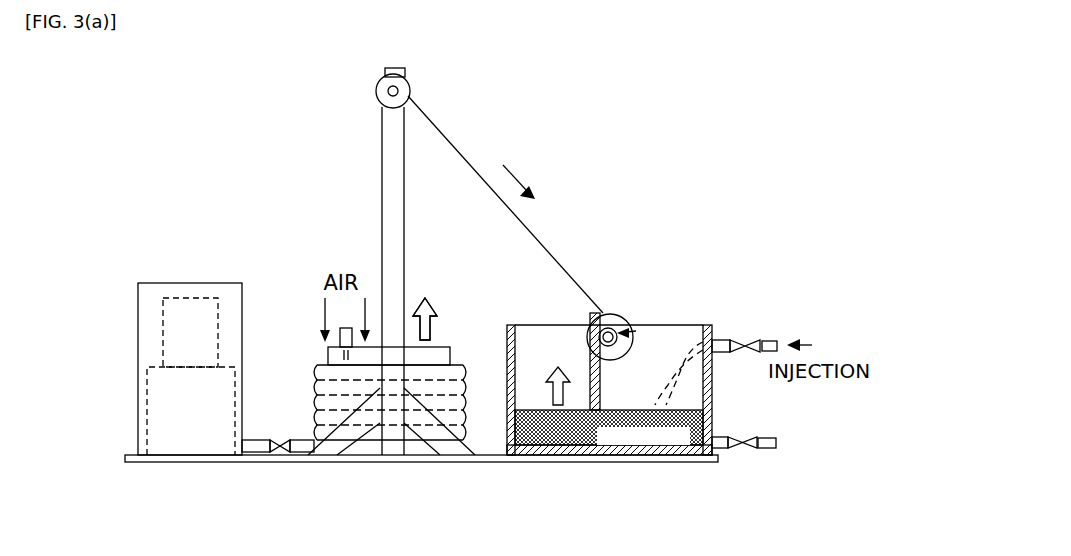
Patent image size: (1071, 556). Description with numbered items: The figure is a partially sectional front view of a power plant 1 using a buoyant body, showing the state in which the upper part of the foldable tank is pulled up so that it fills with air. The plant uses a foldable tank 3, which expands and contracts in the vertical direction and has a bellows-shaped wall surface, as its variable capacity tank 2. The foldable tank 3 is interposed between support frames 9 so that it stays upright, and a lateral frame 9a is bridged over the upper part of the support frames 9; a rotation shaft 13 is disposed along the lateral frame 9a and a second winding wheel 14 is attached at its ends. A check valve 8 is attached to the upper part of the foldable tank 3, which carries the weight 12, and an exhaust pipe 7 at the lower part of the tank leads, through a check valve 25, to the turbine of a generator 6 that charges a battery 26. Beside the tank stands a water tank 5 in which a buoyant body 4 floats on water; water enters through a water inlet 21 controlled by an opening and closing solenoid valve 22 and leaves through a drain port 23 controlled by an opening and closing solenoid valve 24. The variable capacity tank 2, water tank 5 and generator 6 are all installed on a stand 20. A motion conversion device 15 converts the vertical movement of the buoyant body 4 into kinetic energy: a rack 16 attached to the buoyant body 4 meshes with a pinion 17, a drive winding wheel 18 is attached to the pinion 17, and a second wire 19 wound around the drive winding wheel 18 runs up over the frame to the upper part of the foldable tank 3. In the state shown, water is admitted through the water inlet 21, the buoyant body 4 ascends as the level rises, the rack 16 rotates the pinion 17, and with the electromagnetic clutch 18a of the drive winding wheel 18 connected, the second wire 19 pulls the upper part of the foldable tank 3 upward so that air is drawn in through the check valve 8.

The power plant 1 is at (262, 88).
The variable capacity tank 2 is at (451, 319).
The foldable tank 3 is at (451, 319).
The buoyant body 4 is at (580, 448).
The water tank 5 is at (712, 392).
The generator 6 is at (140, 413).
The exhaust pipe 7 is at (250, 458).
The check valve 8 is at (338, 337).
The support frame 9 is at (382, 118).
The lateral frame 9a is at (398, 68).
The weight 12 is at (327, 355).
The rotation shaft 13 is at (401, 92).
The second winding wheel 14 is at (376, 91).
The motion conversion device 15 is at (575, 300).
The rack 16 is at (588, 342).
The pinion 17 is at (620, 341).
The drive winding wheel 18 is at (612, 316).
The electromagnetic clutch 18a is at (624, 332).
The second wire 19 is at (545, 230).
The stand 20 is at (455, 462).
The water inlet 21 is at (712, 330).
The opening and closing solenoid valve 22 is at (736, 340).
The drain port 23 is at (720, 456).
The opening and closing solenoid valve 24 is at (731, 449).
The check valve 25 is at (278, 456).
The battery 26 is at (162, 330).